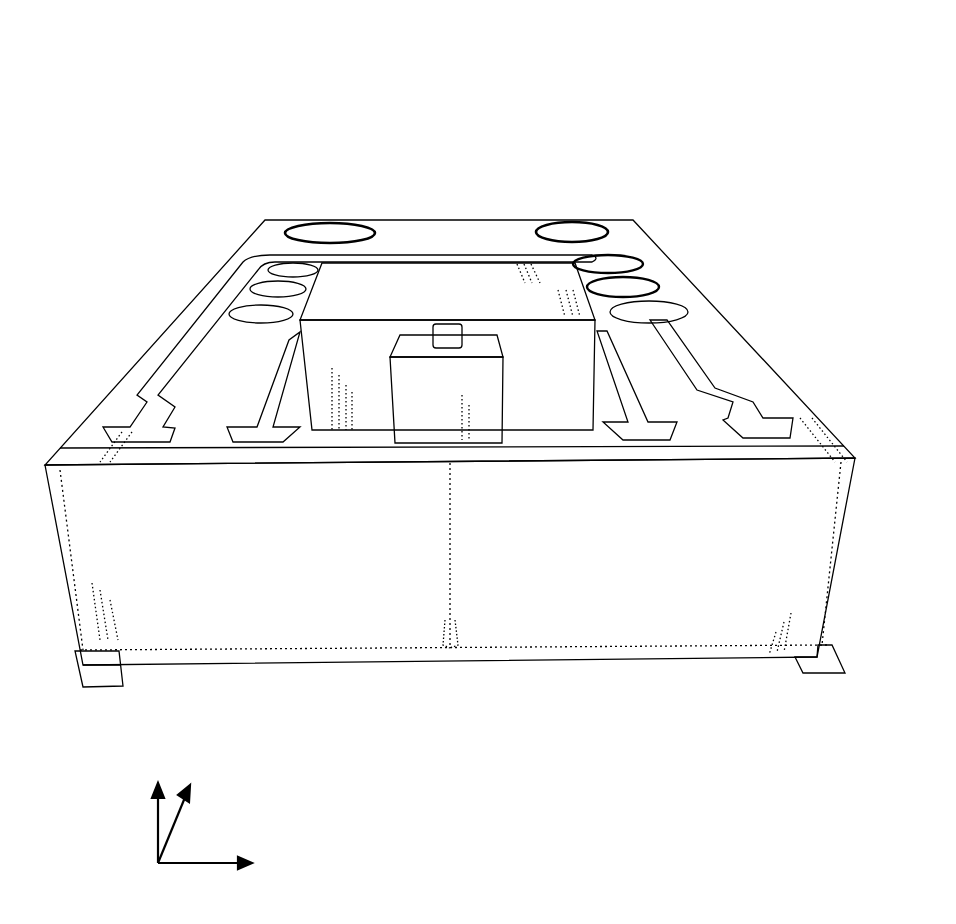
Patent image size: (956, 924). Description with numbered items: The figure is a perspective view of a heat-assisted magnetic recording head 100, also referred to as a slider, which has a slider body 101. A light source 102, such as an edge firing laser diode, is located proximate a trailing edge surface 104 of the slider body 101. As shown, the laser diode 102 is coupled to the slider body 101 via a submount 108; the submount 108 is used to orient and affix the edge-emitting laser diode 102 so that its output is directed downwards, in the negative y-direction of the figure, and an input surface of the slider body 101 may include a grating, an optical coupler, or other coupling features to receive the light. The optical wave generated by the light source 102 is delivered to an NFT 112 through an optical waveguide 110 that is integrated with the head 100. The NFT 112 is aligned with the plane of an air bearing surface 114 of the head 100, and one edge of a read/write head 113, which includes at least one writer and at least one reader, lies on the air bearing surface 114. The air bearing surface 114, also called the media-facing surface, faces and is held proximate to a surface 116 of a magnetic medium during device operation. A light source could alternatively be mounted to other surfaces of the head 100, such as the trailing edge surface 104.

The HAMR head 100 is at (623, 99).
The slider body 101 is at (256, 240).
The light source 102 is at (505, 385).
The trailing edge surface 104 is at (100, 688).
The submount 108 is at (375, 277).
The optical waveguide 110 is at (450, 548).
The NFT 112 is at (450, 647).
The read/write head 113 is at (456, 647).
The air bearing surface 114 is at (803, 673).
The surface of magnetic medium 116 is at (450, 323).